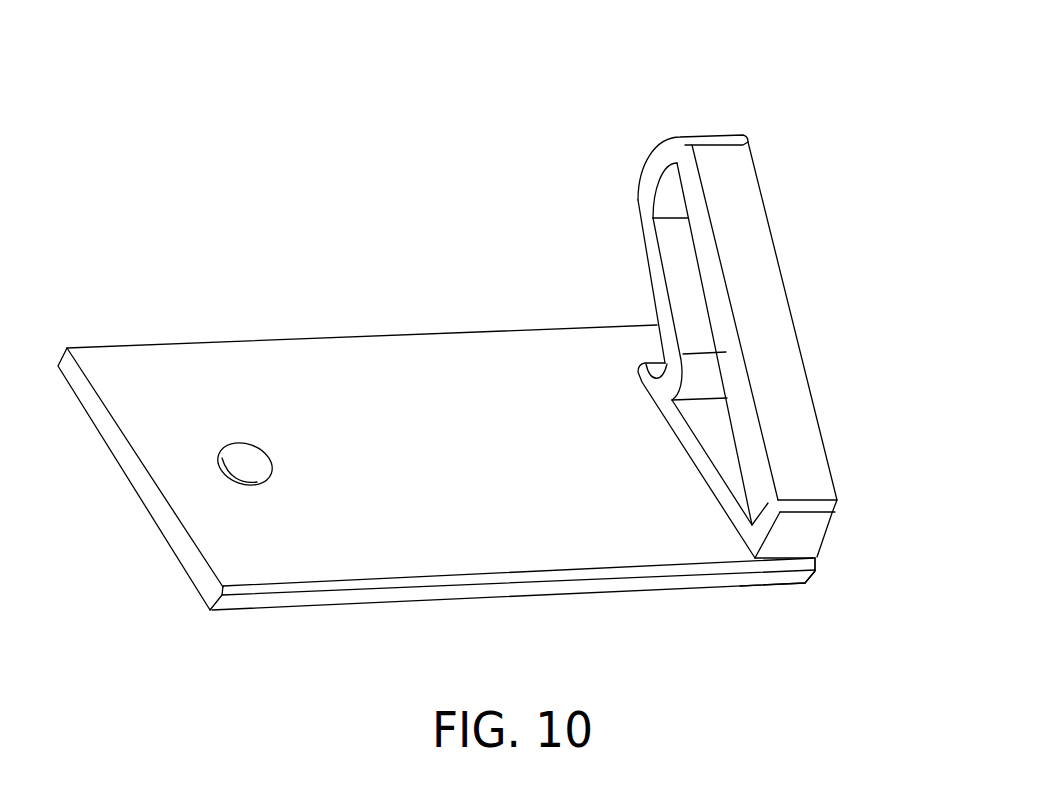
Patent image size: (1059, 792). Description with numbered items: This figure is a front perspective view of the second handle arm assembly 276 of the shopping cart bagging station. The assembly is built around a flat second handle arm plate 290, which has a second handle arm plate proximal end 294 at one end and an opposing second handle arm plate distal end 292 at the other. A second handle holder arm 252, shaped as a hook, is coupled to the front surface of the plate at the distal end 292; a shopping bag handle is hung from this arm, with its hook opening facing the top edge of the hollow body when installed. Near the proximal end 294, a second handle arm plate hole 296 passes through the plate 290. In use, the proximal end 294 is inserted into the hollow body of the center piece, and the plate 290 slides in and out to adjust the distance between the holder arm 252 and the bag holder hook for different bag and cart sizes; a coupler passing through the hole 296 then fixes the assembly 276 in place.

The second handle arm assembly 276 is at (452, 188).
The second handle holder arm 252 is at (740, 193).
The second handle arm plate 290 is at (385, 375).
The second handle arm plate distal end 292 is at (812, 595).
The second handle arm plate proximal end 294 is at (65, 342).
The second handle arm plate hole 296 is at (248, 466).